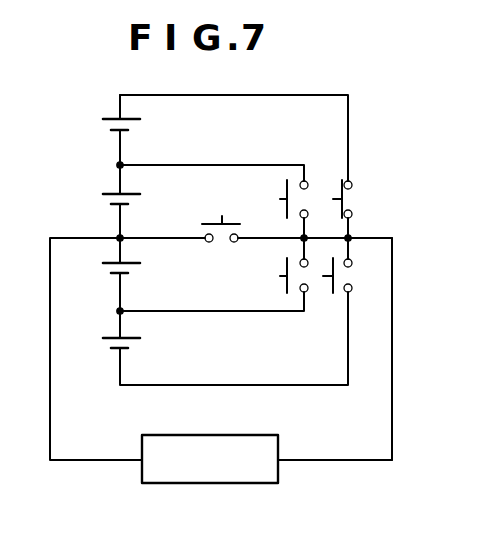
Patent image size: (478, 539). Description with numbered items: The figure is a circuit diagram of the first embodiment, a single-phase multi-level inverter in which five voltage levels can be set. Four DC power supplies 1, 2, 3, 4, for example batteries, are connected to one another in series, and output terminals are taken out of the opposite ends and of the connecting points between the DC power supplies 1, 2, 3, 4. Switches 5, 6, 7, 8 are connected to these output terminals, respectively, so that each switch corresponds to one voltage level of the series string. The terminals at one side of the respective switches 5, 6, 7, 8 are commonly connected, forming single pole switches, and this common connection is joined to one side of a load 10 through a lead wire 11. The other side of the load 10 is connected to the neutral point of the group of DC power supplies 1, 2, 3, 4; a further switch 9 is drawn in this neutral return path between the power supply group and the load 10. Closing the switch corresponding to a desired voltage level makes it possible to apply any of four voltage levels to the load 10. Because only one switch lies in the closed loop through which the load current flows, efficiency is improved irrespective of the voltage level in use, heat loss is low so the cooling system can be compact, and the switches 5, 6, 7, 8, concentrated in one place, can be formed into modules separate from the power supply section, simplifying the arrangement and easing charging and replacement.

The DC power supply 1 is at (103, 124).
The DC power supply 2 is at (103, 198).
The DC power supply 3 is at (103, 269).
The DC power supply 4 is at (105, 345).
The switch 5 is at (352, 201).
The switch 6 is at (281, 192).
The switch 7 is at (281, 280).
The switch 8 is at (352, 269).
The switch 9 is at (221, 243).
The load 10 is at (244, 484).
The lead wire 11 is at (392, 400).